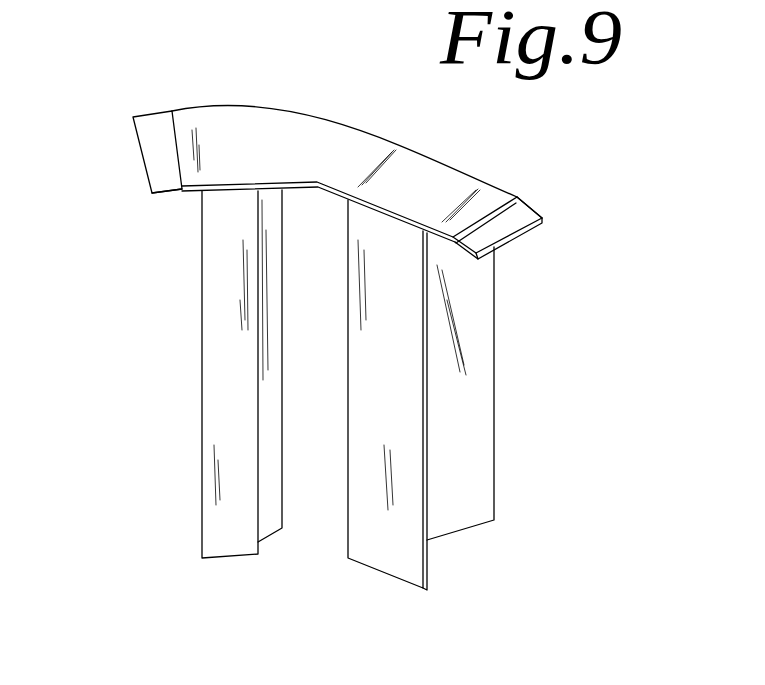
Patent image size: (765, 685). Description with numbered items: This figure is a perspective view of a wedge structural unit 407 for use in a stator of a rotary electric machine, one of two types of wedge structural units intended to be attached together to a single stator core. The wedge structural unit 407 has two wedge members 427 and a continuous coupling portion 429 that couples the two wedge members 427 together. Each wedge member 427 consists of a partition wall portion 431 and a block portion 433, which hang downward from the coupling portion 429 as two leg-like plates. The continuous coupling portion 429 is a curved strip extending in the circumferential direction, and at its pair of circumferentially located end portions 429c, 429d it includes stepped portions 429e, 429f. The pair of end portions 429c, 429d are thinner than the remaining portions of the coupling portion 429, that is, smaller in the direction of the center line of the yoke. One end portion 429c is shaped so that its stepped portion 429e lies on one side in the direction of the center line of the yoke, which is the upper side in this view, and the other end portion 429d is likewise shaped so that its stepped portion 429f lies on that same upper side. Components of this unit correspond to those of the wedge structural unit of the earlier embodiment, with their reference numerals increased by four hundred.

The wedge structural unit 407 is at (203, 122).
The continuous coupling portion 429 is at (345, 140).
The end portion 429c is at (493, 236).
The end portion 429d is at (165, 168).
The stepped portion 429e is at (520, 213).
The stepped portion 429f is at (153, 130).
The wedge member 427 is at (349, 419).
The partition wall portion 431 is at (482, 358).
The block portion 433 is at (223, 423).